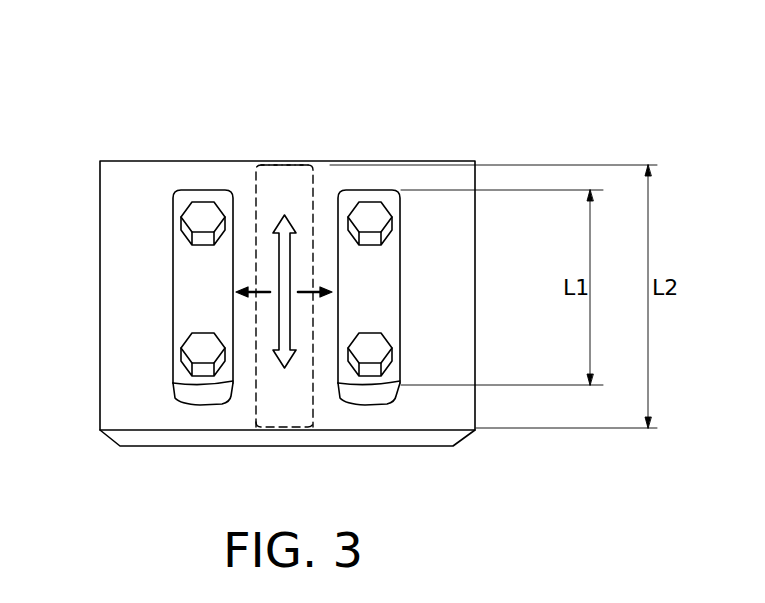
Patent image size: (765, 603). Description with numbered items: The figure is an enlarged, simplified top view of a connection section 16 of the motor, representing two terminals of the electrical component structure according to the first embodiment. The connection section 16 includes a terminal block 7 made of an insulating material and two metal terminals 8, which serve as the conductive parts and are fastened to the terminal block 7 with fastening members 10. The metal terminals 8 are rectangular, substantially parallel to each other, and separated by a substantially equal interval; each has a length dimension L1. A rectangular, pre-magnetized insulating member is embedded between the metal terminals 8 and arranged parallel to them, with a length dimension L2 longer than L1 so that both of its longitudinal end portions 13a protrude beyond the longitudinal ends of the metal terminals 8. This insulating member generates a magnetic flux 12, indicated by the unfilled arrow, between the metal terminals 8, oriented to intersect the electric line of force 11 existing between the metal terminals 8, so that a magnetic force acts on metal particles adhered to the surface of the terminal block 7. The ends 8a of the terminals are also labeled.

The terminal block 7 is at (462, 161).
The metal terminals 8 is at (174, 180).
The bracket end portion 8a is at (200, 190).
The fastening members 10 is at (200, 227).
The electric line of force 11 is at (253, 288).
The magnetic flux 12 is at (285, 327).
The longitudinal end portions 13a is at (292, 165).
The connection section 16 is at (445, 78).